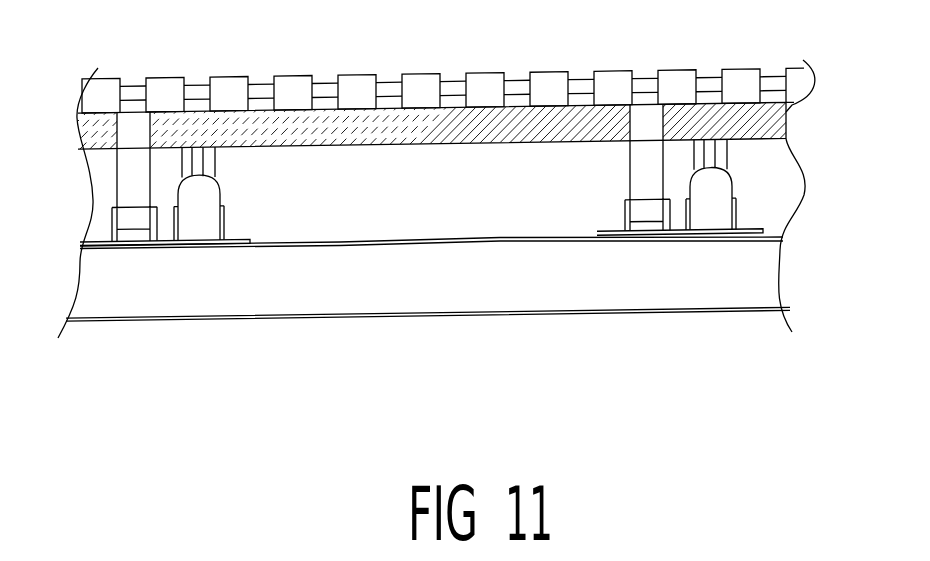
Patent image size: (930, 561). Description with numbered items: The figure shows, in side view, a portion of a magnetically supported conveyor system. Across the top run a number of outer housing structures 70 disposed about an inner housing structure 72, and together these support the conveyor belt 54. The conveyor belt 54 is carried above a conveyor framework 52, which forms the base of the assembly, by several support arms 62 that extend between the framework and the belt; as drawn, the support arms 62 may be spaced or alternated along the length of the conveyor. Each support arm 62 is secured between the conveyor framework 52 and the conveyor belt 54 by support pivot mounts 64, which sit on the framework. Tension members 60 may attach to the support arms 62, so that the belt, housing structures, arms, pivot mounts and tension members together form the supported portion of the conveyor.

The conveyor framework 52 is at (337, 288).
The conveyor belt 54 is at (437, 128).
The tension member 60 is at (192, 202).
The support arm 62 is at (130, 170).
The support pivot mount 64 is at (113, 225).
The outer housing structure 70 is at (165, 83).
The inner housing structure 72 is at (259, 91).